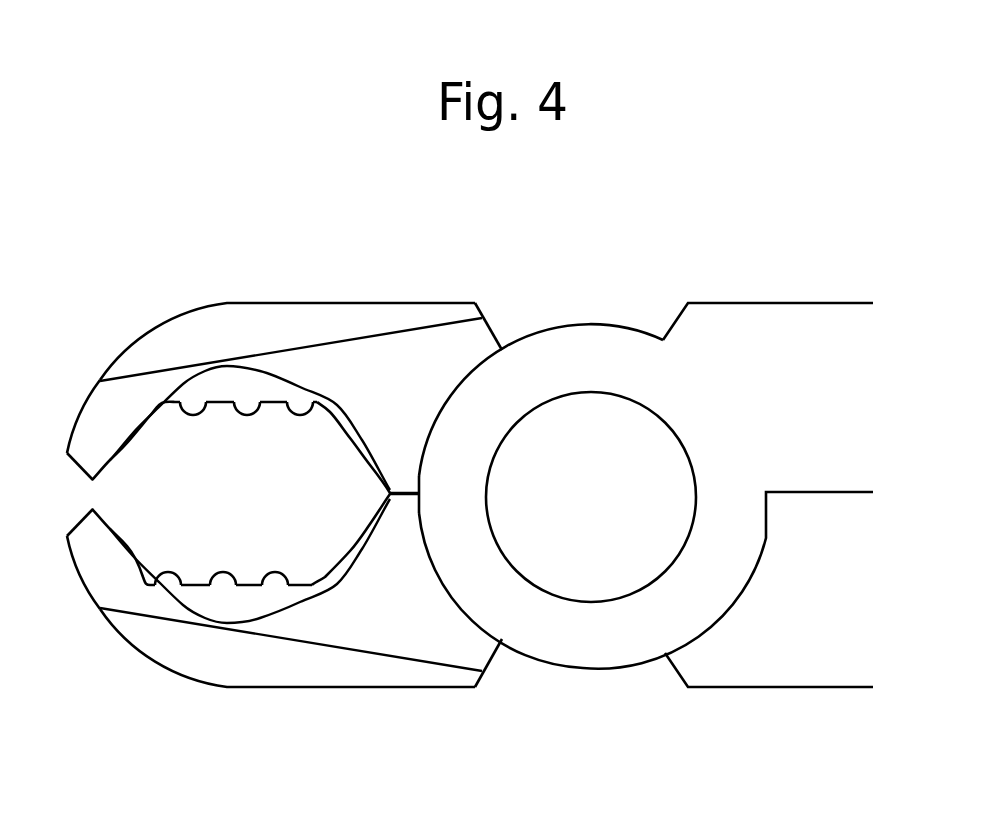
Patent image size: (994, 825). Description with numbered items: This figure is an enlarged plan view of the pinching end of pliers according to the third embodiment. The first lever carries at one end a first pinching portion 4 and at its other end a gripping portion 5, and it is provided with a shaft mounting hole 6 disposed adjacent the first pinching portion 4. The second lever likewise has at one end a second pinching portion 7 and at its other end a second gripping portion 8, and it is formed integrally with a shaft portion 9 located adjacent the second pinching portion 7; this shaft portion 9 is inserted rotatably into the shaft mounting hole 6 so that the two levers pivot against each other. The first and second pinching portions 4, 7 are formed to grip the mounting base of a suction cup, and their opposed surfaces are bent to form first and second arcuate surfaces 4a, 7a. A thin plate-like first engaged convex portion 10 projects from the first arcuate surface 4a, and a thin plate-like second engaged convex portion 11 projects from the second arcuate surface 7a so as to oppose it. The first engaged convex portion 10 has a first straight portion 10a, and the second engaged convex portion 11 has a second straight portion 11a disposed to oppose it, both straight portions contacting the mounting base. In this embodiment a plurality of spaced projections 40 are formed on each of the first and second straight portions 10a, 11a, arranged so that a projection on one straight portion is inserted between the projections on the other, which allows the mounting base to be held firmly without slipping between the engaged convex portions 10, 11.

The first pinching portion 4 is at (97, 600).
The first arcuate surface 4a is at (280, 607).
The gripping portion 5 is at (830, 340).
The shaft mounting hole 6 is at (588, 356).
The second pinching portion 7 is at (117, 410).
The second arcuate surface 7a is at (252, 363).
The second gripping portion 8 is at (835, 673).
The shaft portion 9 is at (593, 572).
The first engaged convex portion 10 is at (207, 600).
The first straight portion 10a is at (117, 590).
The second engaged convex portion 11 is at (203, 388).
The second straight portion 11a is at (355, 430).
The spaced projections 40 is at (247, 402).